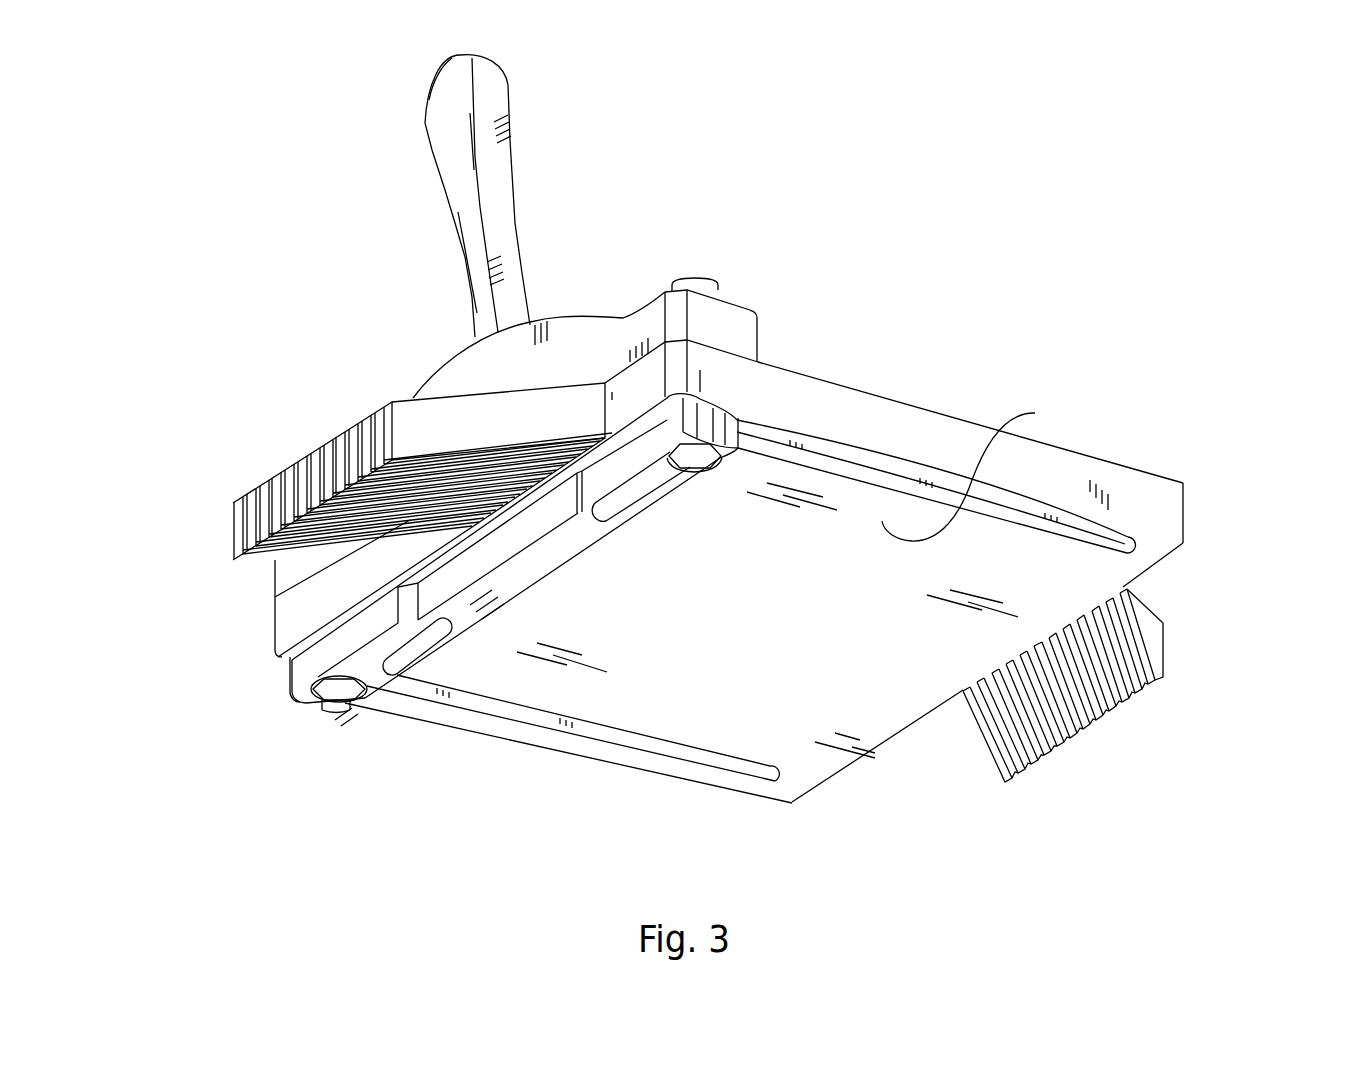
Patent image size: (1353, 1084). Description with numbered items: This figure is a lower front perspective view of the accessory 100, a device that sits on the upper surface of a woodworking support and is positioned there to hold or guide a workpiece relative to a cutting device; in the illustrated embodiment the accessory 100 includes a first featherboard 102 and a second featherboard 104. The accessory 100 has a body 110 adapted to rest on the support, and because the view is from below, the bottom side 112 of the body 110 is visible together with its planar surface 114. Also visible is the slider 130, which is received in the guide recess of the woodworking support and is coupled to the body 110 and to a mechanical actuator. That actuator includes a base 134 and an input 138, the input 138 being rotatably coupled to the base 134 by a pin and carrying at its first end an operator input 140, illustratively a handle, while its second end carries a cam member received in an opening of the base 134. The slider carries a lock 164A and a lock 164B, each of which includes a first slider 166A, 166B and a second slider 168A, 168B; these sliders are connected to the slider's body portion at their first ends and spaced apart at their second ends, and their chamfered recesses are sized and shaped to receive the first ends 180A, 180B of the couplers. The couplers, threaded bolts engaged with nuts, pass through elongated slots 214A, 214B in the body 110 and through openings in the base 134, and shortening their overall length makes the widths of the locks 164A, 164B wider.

The accessory 100 is at (1070, 146).
The first featherboard 102 is at (1115, 729).
The second featherboard 104 is at (226, 510).
The body 110 is at (1220, 436).
The bottom side 112 is at (895, 775).
The planar surface 114 is at (982, 470).
The slider 130 is at (492, 622).
The base 134 is at (580, 340).
The input 138 is at (550, 138).
The operator input 140 is at (450, 96).
The lock 164A is at (768, 412).
The lock 164B is at (320, 756).
The first slider 166A is at (663, 525).
The first slider 166B is at (309, 716).
The second slider 168A is at (644, 433).
The second slider 168B is at (283, 684).
The first end of coupler 180A is at (705, 468).
The first end of coupler 180B is at (340, 696).
The elongated slot 214A is at (1104, 544).
The elongated slot 214B is at (642, 742).